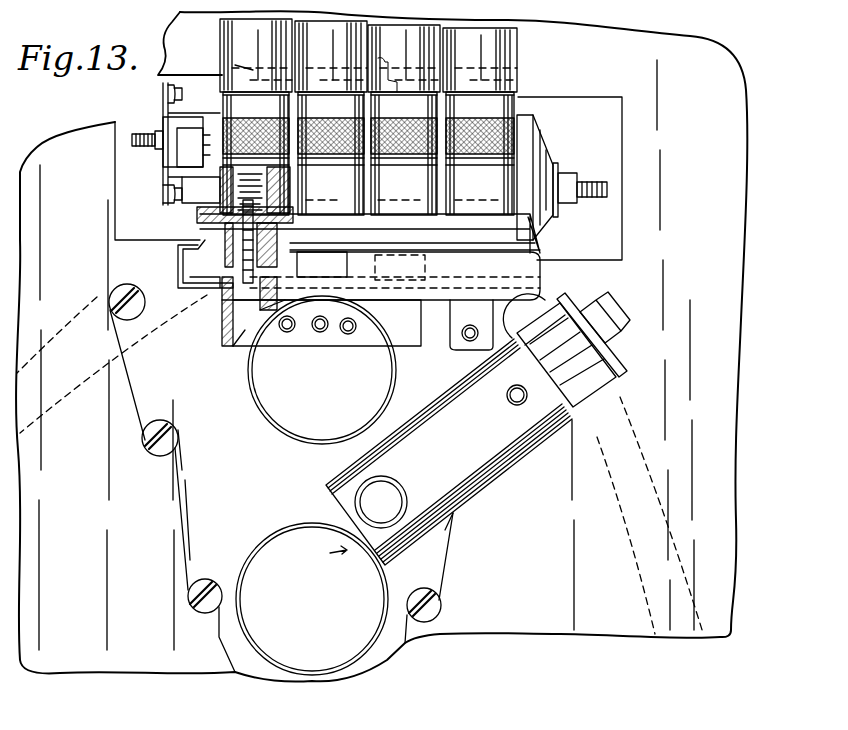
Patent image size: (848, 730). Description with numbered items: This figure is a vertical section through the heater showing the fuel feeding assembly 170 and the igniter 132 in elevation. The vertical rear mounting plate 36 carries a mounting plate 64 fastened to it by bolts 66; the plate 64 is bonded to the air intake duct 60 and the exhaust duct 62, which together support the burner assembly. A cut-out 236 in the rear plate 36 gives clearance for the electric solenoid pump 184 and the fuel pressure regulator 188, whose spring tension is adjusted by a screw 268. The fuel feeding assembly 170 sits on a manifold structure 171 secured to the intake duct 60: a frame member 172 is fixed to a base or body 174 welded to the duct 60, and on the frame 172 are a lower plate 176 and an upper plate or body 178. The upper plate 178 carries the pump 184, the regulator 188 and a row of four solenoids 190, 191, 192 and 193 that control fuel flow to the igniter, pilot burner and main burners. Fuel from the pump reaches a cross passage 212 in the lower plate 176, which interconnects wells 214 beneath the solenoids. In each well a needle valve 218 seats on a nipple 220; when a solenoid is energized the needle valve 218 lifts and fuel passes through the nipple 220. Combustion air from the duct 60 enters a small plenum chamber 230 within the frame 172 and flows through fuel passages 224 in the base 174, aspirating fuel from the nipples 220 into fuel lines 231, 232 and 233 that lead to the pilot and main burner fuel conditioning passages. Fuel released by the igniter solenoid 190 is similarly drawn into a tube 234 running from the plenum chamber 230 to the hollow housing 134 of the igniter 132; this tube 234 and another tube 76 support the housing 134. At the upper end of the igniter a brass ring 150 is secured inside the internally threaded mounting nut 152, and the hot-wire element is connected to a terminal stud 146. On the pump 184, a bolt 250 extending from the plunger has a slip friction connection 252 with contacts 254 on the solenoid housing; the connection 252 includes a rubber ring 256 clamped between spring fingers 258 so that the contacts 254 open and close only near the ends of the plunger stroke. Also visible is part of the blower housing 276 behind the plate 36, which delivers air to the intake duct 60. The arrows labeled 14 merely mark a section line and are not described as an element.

The rear mounting plate 36 is at (733, 78).
The fuel feeding assembly 170 is at (409, 117).
The igniter fuel solenoid 190 is at (480, 121).
The solenoid 191 is at (404, 120).
The solenoid 192 is at (331, 118).
The solenoid 193 is at (256, 117).
The electric solenoid pump 184 is at (248, 65).
The fuel pressure regulator 188 is at (540, 150).
The screw 268 is at (607, 192).
The cut-out 236 is at (622, 137).
The upper plate 178 is at (535, 232).
The lower plate 176 is at (530, 253).
The manifold base 174 is at (413, 350).
The cross passage 212 is at (280, 247).
The well 214 is at (205, 228).
The plenum chamber 230 is at (178, 259).
The needle valve 218 is at (230, 255).
The nipple 220 is at (222, 296).
The fuel passage 224 is at (235, 346).
The fuel line 231 is at (288, 332).
The fuel line 232 is at (320, 332).
The fuel line 233 is at (348, 334).
The slip friction connection 252 is at (168, 118).
The contacts 254 is at (163, 195).
The spring fingers 258 is at (200, 160).
The bolt 250 is at (186, 143).
The rubber ring 256 is at (201, 190).
The air intake duct 60 is at (280, 440).
The exhaust duct 62 is at (280, 530).
The tape 14 is at (612, 300).
The tube 76 is at (402, 490).
The frame member 172 is at (102, 297).
The manifold structure 171 is at (113, 375).
The bolts 66 is at (441, 600).
The mounting plate 64 is at (195, 540).
The igniter 132 is at (537, 462).
The igniter housing 134 is at (478, 492).
The tube 234 is at (497, 385).
The mounting nut 152 is at (607, 385).
The brass ring 150 is at (620, 352).
The terminal stud 146 is at (598, 312).
The blower housing 276 is at (687, 479).